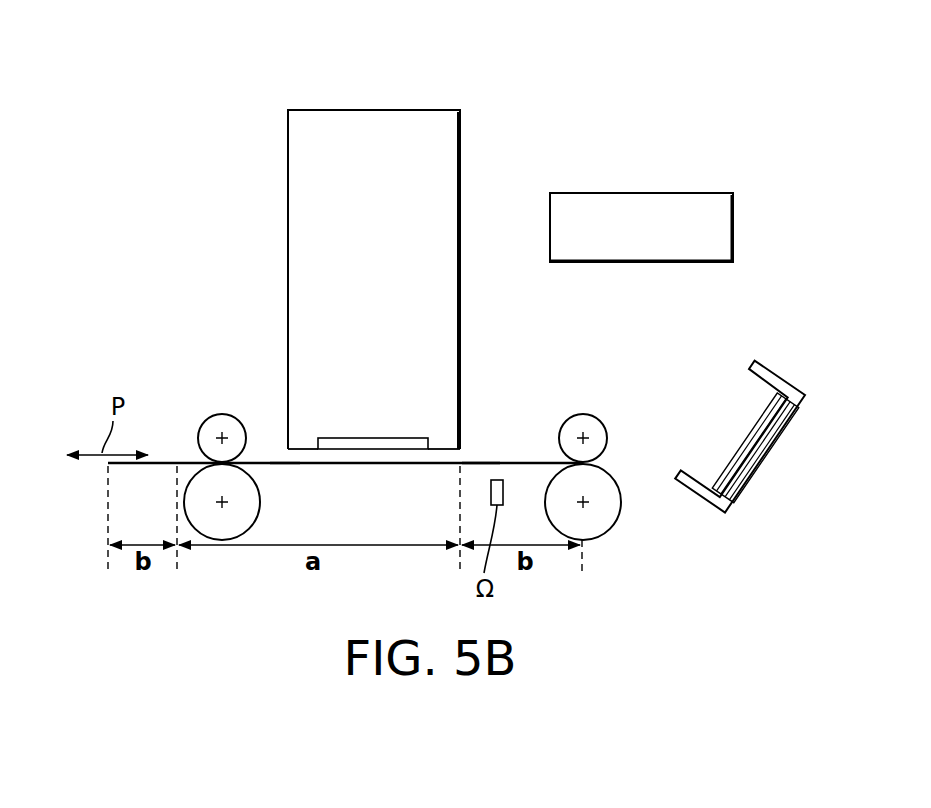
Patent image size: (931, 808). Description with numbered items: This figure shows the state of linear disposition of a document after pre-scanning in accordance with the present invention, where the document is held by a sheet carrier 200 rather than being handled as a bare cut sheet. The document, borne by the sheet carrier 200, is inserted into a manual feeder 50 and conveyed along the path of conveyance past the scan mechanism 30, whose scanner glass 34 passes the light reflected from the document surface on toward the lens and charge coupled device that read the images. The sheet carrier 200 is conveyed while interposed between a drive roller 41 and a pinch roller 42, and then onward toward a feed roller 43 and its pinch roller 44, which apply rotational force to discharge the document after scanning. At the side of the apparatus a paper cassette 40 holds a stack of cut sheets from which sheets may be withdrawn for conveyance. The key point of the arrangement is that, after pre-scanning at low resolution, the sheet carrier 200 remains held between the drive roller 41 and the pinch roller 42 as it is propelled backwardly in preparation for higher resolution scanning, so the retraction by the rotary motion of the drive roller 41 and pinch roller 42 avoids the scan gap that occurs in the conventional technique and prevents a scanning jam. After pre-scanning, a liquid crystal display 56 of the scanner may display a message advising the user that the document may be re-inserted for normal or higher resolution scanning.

The scan mechanism 30 is at (369, 100).
The scanner glass 34 is at (353, 443).
The liquid crystal display (LCD) 56 is at (676, 185).
The sheet carrier 200 is at (475, 456).
The pinch roller 44 is at (203, 424).
The feed roller 43 is at (185, 509).
The pinch roller 42 is at (581, 415).
The drive roller 41 is at (620, 510).
The manual feeder 50 is at (611, 469).
The paper cassette 40 is at (742, 426).